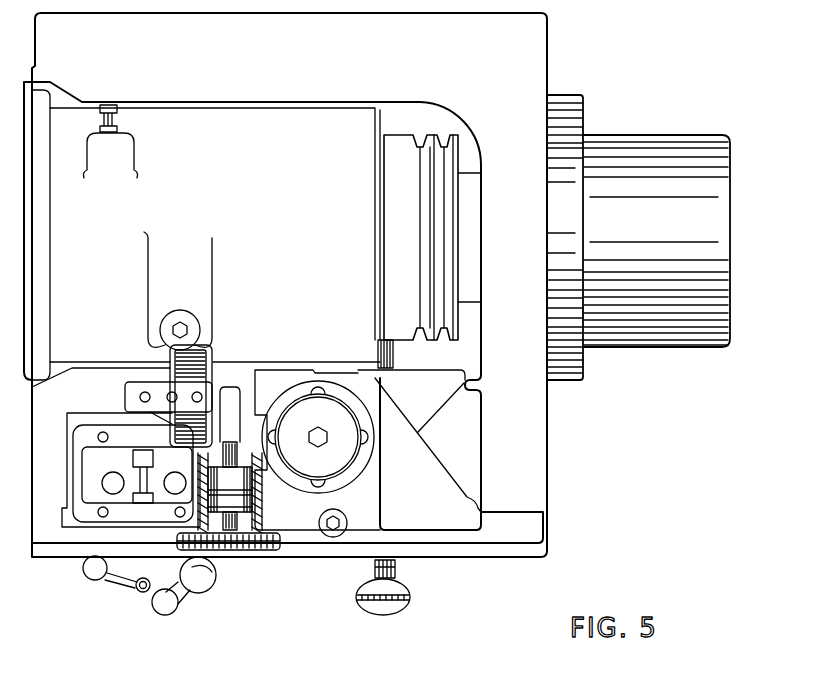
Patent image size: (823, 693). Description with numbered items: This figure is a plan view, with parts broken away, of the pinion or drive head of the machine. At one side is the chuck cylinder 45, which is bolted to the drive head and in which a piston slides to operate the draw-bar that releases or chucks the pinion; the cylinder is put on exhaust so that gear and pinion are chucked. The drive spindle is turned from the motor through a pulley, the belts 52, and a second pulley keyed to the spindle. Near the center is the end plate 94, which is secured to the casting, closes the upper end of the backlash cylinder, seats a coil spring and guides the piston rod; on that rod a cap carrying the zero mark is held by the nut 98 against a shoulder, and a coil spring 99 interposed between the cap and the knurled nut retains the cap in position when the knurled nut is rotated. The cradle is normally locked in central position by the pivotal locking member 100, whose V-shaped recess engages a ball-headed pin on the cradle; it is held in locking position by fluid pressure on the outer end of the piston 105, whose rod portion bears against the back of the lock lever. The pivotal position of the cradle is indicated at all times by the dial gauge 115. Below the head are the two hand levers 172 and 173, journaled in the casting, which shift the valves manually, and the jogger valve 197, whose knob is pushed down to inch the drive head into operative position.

The cylinder 45 is at (640, 325).
The belts 52 is at (438, 342).
The dial gauge 115 is at (194, 376).
The locking member 100 is at (232, 403).
The nut 98 is at (317, 428).
The coil spring 99 is at (343, 448).
The end plate 94 is at (343, 478).
The piston 105 is at (232, 478).
The hand lever 173 is at (118, 580).
The hand lever 172 is at (188, 590).
The jogger valve 197 is at (383, 607).